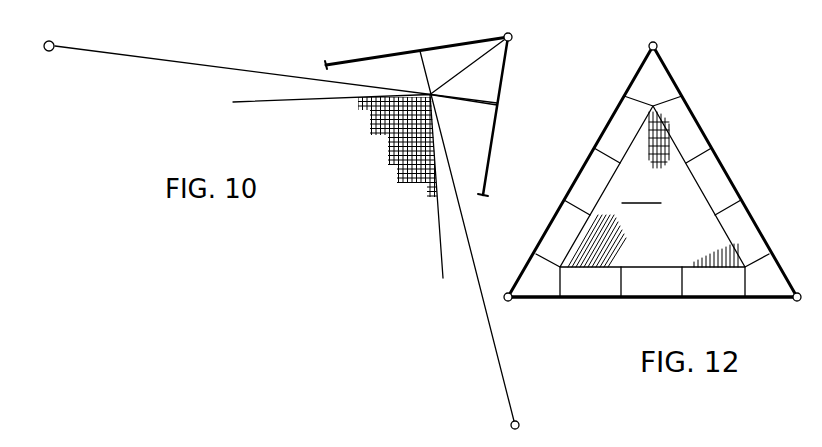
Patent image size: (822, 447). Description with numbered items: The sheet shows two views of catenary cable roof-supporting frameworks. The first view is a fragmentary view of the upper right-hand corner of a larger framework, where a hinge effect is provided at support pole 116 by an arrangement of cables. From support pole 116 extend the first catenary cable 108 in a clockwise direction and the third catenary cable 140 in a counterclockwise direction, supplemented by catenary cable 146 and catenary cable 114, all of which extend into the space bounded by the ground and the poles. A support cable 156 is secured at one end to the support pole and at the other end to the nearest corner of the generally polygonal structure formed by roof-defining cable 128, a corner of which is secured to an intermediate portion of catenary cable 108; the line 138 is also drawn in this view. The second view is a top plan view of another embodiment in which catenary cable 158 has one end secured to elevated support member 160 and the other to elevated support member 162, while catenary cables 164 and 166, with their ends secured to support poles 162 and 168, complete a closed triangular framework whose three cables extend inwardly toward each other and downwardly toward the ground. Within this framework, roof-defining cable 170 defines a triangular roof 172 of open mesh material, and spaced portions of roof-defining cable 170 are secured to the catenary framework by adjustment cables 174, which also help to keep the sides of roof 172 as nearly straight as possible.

In FIG. 10, the first catenary cable 108 is at (502, 88).
In FIG. 10, the catenary cable 114 is at (467, 98).
In FIG. 10, the support pole 116 is at (513, 37).
In FIG. 10, the roof-defining cable 128 is at (420, 183).
In FIG. 10, the tension line 138 is at (270, 51).
In FIG. 10, the third catenary cable 140 is at (447, 48).
In FIG. 10, the catenary cable 146 is at (417, 66).
In FIG. 10, the support cable 156 is at (480, 61).
In FIG. 10, the catenary cable 166 is at (504, 192).
In FIG. 12, the catenary cable 158 is at (718, 165).
In FIG. 12, the elevated support member 160 is at (660, 44).
In FIG. 12, the elevated support member 162 is at (798, 292).
In FIG. 12, the catenary cable 164 is at (662, 288).
In FIG. 12, the support pole 168 is at (512, 303).
In FIG. 12, the roof-defining cable 170 is at (653, 266).
In FIG. 12, the triangular roof 172 is at (641, 193).
In FIG. 12, the adjustment cables 174 is at (642, 102).